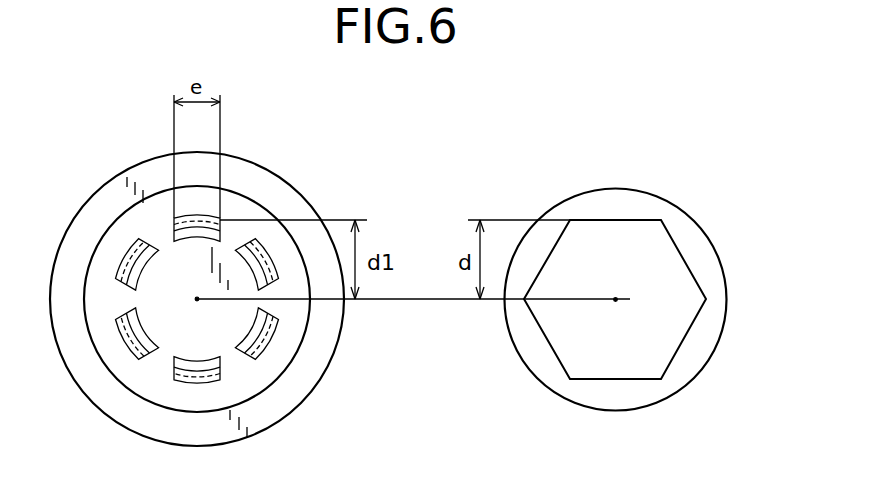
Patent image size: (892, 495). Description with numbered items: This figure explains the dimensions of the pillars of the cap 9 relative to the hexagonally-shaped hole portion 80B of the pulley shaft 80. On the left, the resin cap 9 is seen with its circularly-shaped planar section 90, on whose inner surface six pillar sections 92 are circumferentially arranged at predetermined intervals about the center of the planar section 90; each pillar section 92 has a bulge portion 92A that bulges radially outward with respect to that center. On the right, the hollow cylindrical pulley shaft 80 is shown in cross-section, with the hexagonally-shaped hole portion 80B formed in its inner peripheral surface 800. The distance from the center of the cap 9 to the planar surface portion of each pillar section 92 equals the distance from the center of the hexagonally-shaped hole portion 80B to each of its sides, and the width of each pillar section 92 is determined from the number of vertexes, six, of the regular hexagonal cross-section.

The cap 9 is at (95, 182).
The planar section 90 is at (277, 173).
The pillar sections 92 is at (273, 340).
The bulge portion 92A is at (137, 370).
The pulley shaft 80 is at (662, 198).
The hexagonally-shaped hole portion 80B is at (580, 220).
The inner peripheral surface 800 is at (615, 299).